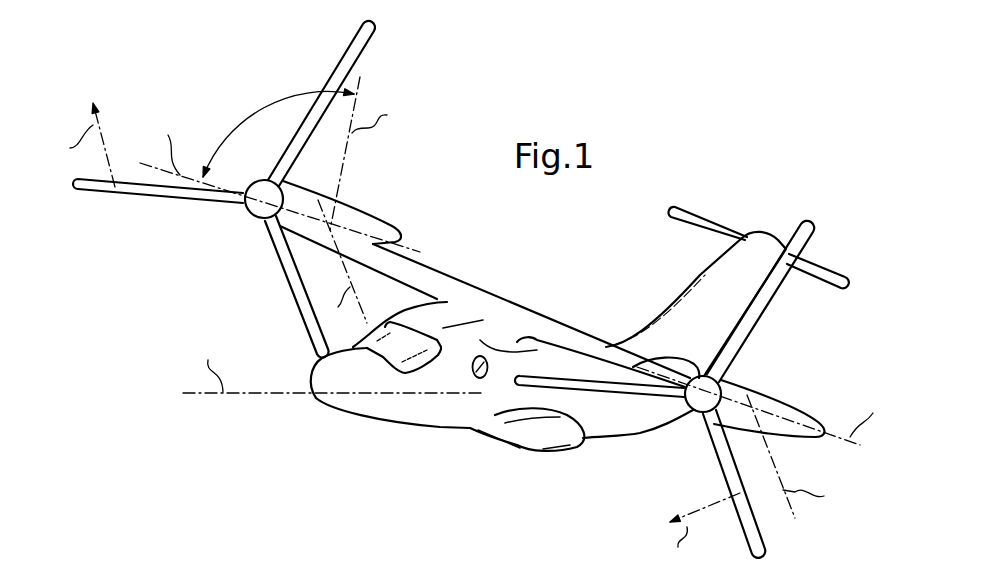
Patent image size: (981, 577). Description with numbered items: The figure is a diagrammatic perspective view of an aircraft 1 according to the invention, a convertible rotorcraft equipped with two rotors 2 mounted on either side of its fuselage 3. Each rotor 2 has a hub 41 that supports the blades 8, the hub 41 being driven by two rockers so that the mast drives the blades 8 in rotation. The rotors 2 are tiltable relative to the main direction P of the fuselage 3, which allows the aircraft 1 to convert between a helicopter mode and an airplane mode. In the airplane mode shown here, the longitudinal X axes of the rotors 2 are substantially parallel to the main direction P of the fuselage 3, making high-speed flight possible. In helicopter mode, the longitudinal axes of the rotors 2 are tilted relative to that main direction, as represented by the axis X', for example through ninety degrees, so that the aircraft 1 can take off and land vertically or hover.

The aircraft 1 is at (270, 467).
The rotor 2 is at (373, 193).
The fuselage 3 is at (600, 433).
The blade 8 is at (346, 56).
The hub 41 is at (257, 210).